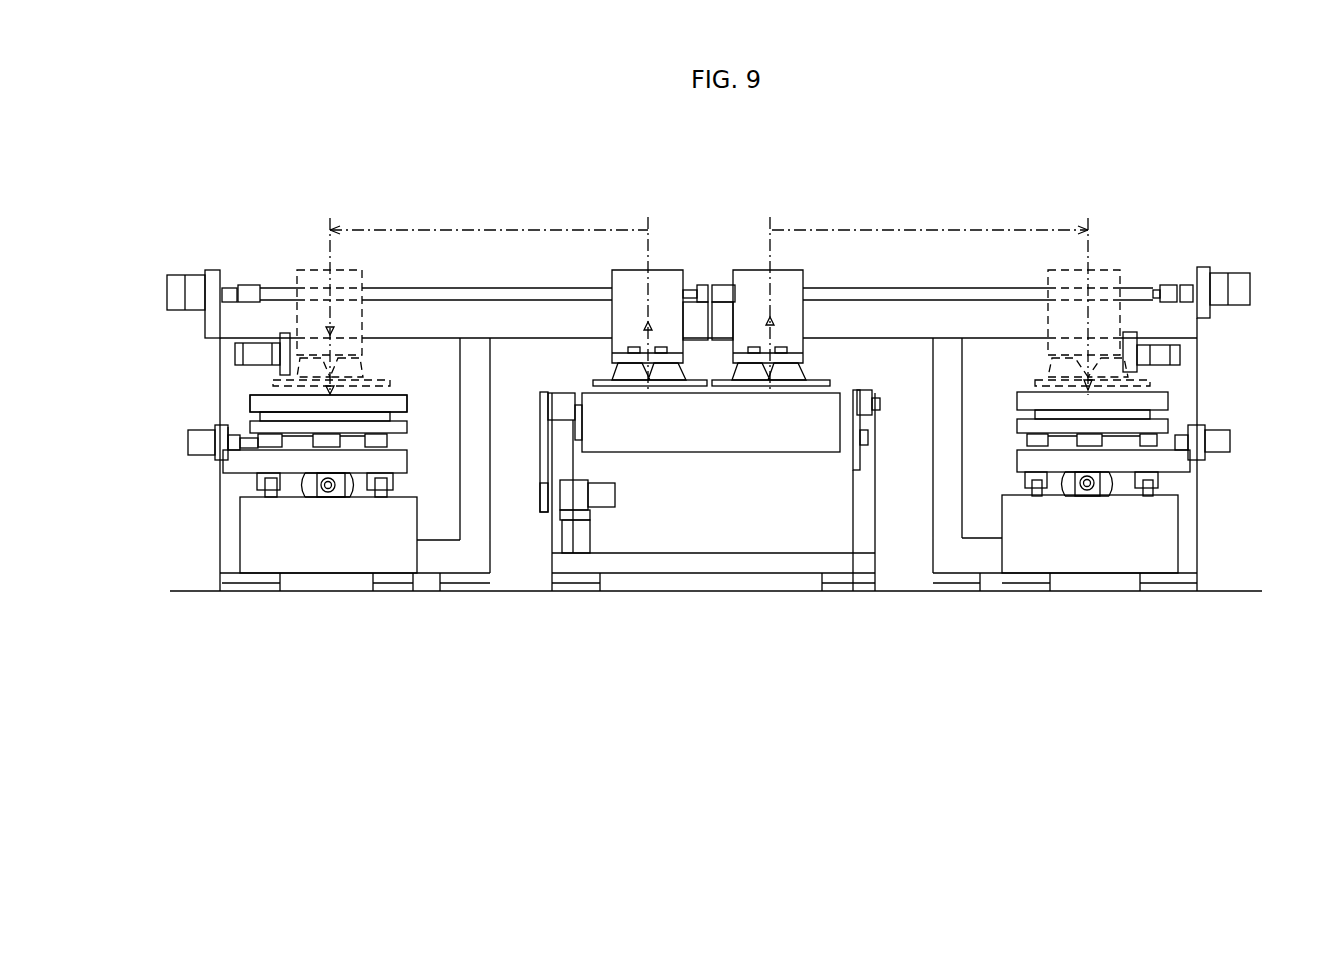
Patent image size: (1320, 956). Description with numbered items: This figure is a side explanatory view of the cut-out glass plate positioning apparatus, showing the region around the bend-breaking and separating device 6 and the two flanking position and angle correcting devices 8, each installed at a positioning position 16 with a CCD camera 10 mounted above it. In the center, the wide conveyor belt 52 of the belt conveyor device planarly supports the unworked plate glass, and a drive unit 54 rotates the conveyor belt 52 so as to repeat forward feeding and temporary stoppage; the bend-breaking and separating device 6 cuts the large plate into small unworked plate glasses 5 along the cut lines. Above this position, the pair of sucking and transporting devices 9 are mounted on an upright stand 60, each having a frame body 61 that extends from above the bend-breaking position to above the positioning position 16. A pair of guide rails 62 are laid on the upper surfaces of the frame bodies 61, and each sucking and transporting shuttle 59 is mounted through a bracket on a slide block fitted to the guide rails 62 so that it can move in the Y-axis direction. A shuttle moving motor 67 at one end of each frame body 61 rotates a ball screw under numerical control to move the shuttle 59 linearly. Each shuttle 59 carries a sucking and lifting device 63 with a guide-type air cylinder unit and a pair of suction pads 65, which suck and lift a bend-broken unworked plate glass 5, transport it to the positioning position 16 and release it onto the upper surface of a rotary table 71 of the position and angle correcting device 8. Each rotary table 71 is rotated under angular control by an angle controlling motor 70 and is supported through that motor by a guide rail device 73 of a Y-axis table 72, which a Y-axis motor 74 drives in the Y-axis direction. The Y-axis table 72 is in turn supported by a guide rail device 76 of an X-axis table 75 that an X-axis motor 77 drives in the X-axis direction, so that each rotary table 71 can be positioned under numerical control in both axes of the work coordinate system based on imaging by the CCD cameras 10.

The unworked plate glass 5 is at (636, 386).
The bend-breaking and separating device 6 is at (708, 515).
The position and angle correcting device 8 is at (255, 402).
The sucking and transporting device 9 is at (578, 300).
The CCD camera 10 is at (280, 364).
The positioning position 16 is at (300, 322).
The conveyor belt 52 is at (823, 400).
The drive unit 54 is at (573, 497).
The sucking and transporting shuttle 59 is at (664, 285).
The upright stand 60 is at (475, 513).
The frame body 61 is at (492, 318).
The guide rail 62 is at (402, 295).
The sucking and lifting device 63 is at (633, 327).
The suction pad 65 is at (667, 380).
The shuttle moving motor 67 is at (188, 282).
The angle controlling motor 70 is at (367, 418).
The rotary table 71 is at (282, 400).
The Y-axis table 72 is at (393, 427).
The guide rail device 73 is at (285, 445).
The Y-axis motor 74 is at (198, 444).
The X-axis table 75 is at (297, 463).
The guide rail device 76 is at (383, 490).
The X-axis motor 77 is at (350, 490).